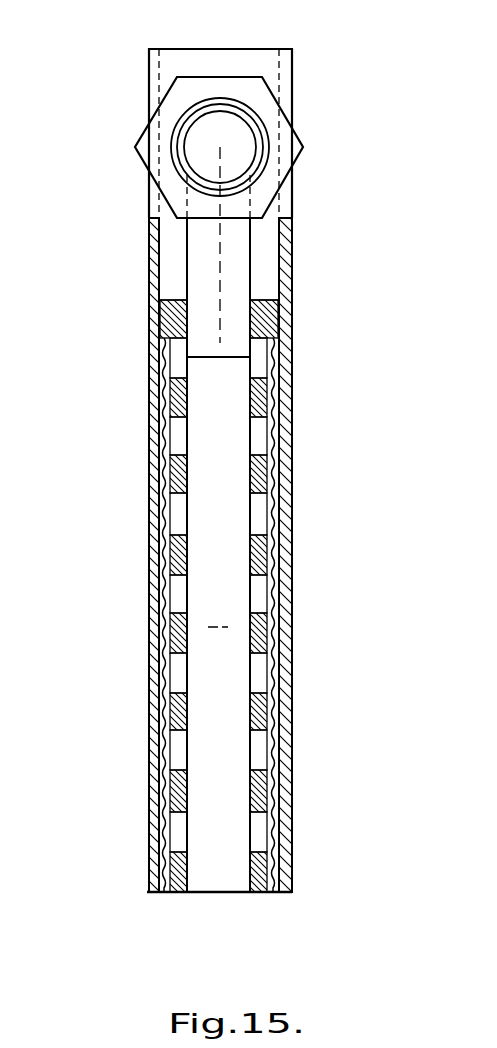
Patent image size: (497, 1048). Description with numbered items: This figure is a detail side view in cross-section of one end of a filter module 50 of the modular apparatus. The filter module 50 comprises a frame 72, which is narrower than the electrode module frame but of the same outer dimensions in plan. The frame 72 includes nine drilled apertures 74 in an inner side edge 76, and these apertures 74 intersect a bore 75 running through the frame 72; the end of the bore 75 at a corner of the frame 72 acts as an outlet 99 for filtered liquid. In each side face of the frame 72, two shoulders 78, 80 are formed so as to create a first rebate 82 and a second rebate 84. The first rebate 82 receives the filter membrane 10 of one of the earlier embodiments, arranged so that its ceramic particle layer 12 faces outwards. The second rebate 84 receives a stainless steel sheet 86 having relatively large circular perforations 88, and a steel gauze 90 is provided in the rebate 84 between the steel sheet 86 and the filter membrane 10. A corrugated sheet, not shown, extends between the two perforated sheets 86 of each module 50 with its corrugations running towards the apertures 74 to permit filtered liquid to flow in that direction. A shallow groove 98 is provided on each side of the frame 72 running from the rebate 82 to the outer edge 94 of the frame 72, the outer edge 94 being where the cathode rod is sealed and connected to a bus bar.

The filter membrane 10 is at (292, 858).
The ceramic particle layer 12 is at (292, 808).
The filter module 50 is at (152, 578).
The frame 72 is at (233, 65).
The drilled apertures 74 is at (215, 262).
The bore 75 is at (222, 152).
The inner side edge 76 is at (207, 360).
The shoulder 78 is at (292, 223).
The shoulder 80 is at (292, 312).
The first rebate 82 is at (152, 245).
The second rebate 84 is at (163, 325).
The stainless steel sheet 86 is at (178, 893).
The circular perforations 88 is at (177, 838).
The steel gauze 90 is at (272, 893).
The outer edge 94 is at (187, 48).
The shallow groove 98 is at (280, 88).
The outlet 99 is at (205, 130).